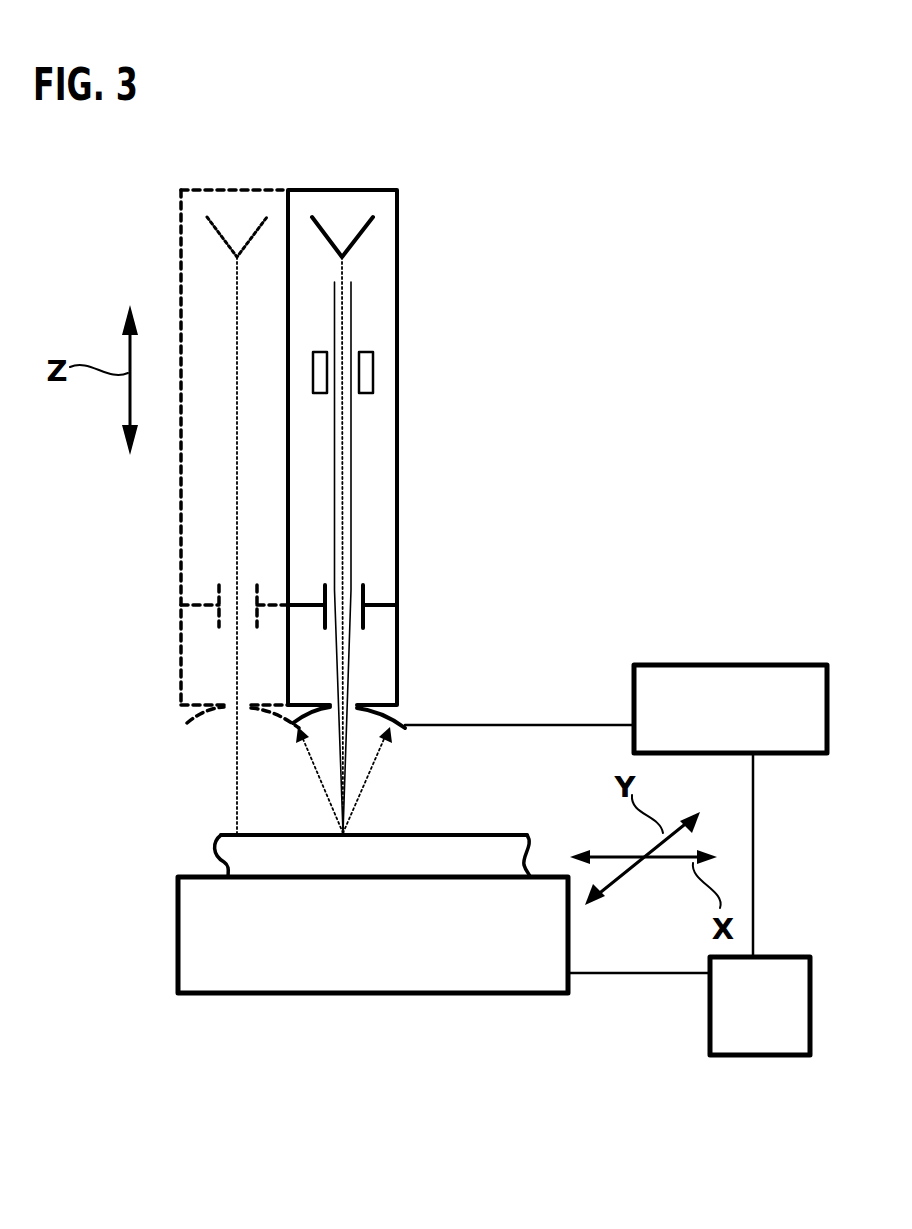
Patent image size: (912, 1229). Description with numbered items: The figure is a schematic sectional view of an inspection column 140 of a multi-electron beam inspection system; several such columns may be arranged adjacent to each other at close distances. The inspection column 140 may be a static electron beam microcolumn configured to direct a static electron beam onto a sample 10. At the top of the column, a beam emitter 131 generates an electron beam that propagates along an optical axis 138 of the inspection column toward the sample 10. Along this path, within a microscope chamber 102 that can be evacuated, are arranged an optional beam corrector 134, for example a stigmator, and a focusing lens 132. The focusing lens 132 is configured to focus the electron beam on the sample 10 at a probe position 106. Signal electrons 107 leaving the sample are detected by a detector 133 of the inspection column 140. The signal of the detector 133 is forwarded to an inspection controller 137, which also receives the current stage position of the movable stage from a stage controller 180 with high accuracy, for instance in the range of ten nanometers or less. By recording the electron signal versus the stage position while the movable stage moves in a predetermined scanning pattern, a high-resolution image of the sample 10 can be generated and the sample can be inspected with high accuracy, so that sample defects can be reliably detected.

The inspection column 140 is at (338, 162).
The microscope chamber 102 is at (368, 190).
The beam emitter 131 is at (362, 237).
The optical axis 138 is at (343, 325).
The beam corrector 134 is at (367, 372).
The focusing lens 132 is at (363, 585).
The detector 133 is at (403, 728).
The signal electrons 107 is at (371, 781).
The probe position 106 is at (350, 833).
The sample 10 is at (247, 855).
The inspection controller 137 is at (616, 709).
The stage controller 180 is at (689, 904).